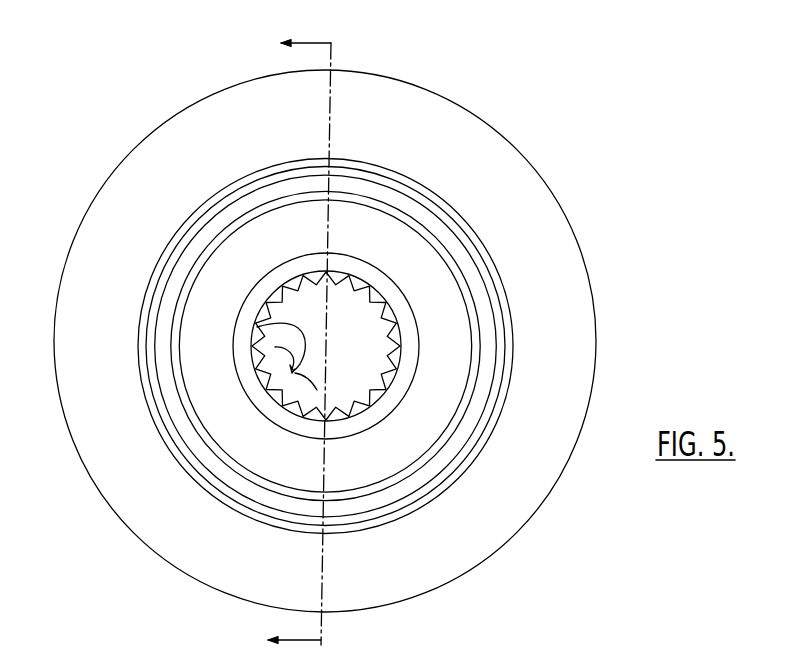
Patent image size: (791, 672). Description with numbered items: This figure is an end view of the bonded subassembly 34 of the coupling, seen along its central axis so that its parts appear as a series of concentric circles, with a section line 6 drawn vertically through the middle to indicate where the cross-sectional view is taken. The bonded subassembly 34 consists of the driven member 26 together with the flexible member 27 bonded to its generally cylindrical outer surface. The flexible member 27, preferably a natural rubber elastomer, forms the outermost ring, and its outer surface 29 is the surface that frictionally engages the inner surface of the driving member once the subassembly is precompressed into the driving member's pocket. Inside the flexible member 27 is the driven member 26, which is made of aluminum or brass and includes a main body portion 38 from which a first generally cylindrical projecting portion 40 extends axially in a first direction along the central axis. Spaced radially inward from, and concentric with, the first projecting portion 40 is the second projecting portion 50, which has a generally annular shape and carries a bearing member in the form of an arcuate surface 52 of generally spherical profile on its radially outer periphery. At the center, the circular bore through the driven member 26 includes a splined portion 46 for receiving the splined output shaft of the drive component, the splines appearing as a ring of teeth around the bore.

The section line 6 is at (299, 344).
The driven member 26 is at (193, 262).
The flexible member 27 is at (543, 363).
The outer surface of the flexible member 29 is at (516, 580).
The bonded subassembly 34 is at (482, 115).
The main body portion 38 is at (403, 457).
The first generally cylindrical projecting portion 40 is at (462, 427).
The splined portion 46 is at (257, 325).
The second projecting portion 50 is at (285, 425).
The arcuate surface 52 is at (420, 332).